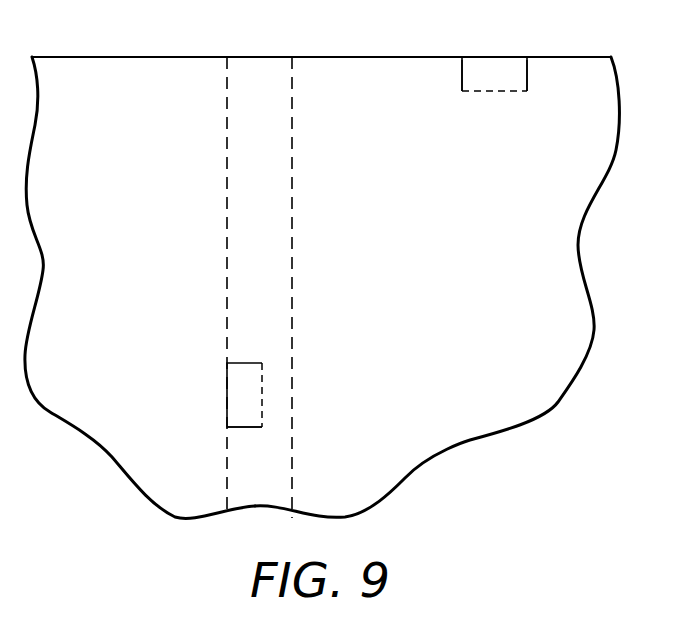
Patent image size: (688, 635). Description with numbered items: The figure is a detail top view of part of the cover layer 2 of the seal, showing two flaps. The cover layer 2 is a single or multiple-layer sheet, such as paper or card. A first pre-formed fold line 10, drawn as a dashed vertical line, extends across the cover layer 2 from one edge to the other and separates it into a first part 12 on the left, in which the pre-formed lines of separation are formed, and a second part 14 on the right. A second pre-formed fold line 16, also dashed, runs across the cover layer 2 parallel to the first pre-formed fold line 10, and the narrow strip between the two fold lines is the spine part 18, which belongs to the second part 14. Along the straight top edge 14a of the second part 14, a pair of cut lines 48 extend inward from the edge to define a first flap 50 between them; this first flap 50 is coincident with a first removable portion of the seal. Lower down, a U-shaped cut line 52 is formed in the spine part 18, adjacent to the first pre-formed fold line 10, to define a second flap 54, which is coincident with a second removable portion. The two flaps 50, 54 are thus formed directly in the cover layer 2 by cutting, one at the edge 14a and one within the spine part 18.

The cover layer 2 is at (322, 287).
The first pre-formed fold line 10 is at (227, 139).
The first part 12 is at (117, 273).
The second part 14 is at (420, 274).
The edge 14a is at (395, 56).
The second pre-formed fold line 16 is at (292, 139).
The spine part 18 is at (260, 75).
The cut lines 48 is at (462, 78).
The first flap 50 is at (496, 72).
The U-shaped cut line 52 is at (227, 394).
The second flap 54 is at (243, 418).